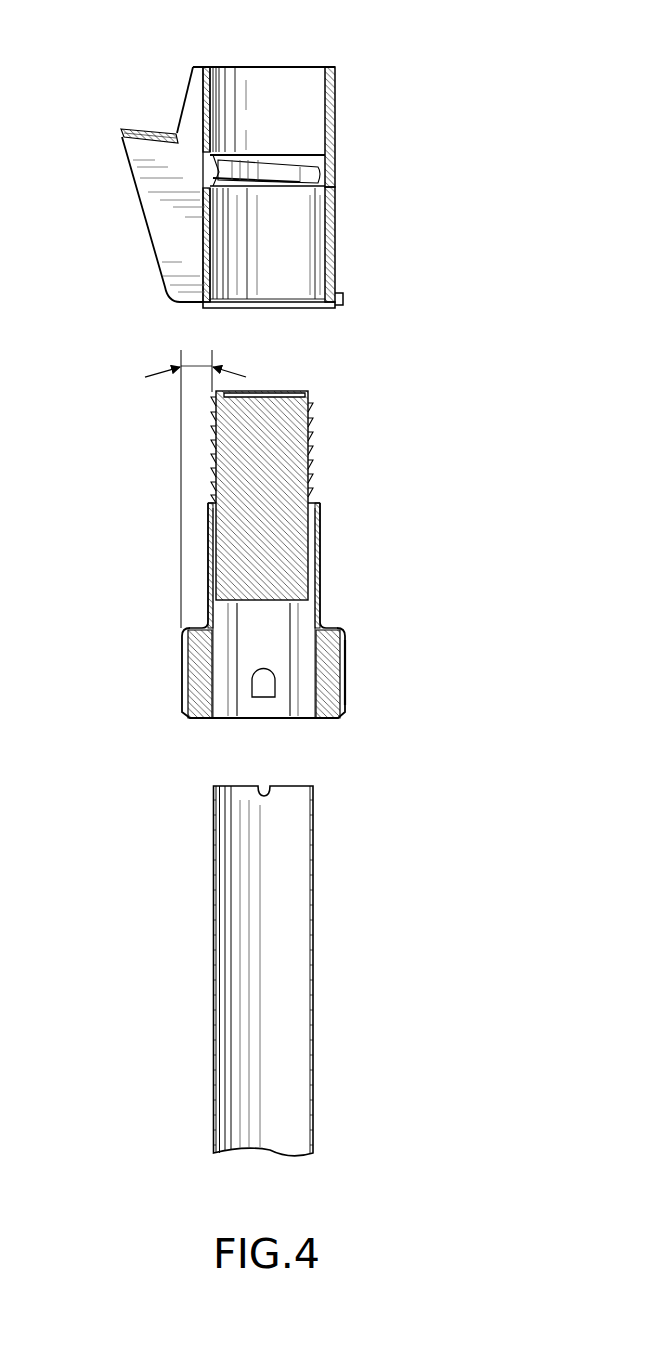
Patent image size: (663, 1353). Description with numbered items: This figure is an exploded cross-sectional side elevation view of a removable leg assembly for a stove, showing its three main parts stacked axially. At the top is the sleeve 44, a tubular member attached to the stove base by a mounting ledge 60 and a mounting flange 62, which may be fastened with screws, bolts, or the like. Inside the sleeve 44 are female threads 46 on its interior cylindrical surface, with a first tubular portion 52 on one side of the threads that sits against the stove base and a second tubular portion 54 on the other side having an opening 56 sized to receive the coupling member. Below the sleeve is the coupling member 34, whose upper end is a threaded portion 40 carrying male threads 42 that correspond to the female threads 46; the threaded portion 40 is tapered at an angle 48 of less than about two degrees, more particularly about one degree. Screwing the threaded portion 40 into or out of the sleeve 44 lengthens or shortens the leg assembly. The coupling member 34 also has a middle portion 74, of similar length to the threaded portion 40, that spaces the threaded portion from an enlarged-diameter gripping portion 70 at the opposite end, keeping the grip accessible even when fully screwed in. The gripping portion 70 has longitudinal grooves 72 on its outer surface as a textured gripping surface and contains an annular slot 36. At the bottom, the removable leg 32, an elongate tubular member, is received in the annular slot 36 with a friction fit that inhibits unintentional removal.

The removable leg 32 is at (315, 890).
The coupling member 34 is at (387, 536).
The annular slot 36 is at (219, 697).
The threaded portion 40 is at (300, 408).
The male threads 42 is at (312, 475).
The sleeve 44 is at (388, 151).
The female threads 46 is at (232, 174).
The angle 48 is at (197, 365).
The first tubular portion 52 is at (330, 103).
The second tubular portion 54 is at (332, 248).
The opening 56 is at (286, 292).
The mounting ledge 60 is at (128, 130).
The mounting flange 62 is at (343, 297).
The gripping portion 70 is at (347, 685).
The longitudinal grooves 72 is at (347, 660).
The middle portion 74 is at (320, 580).